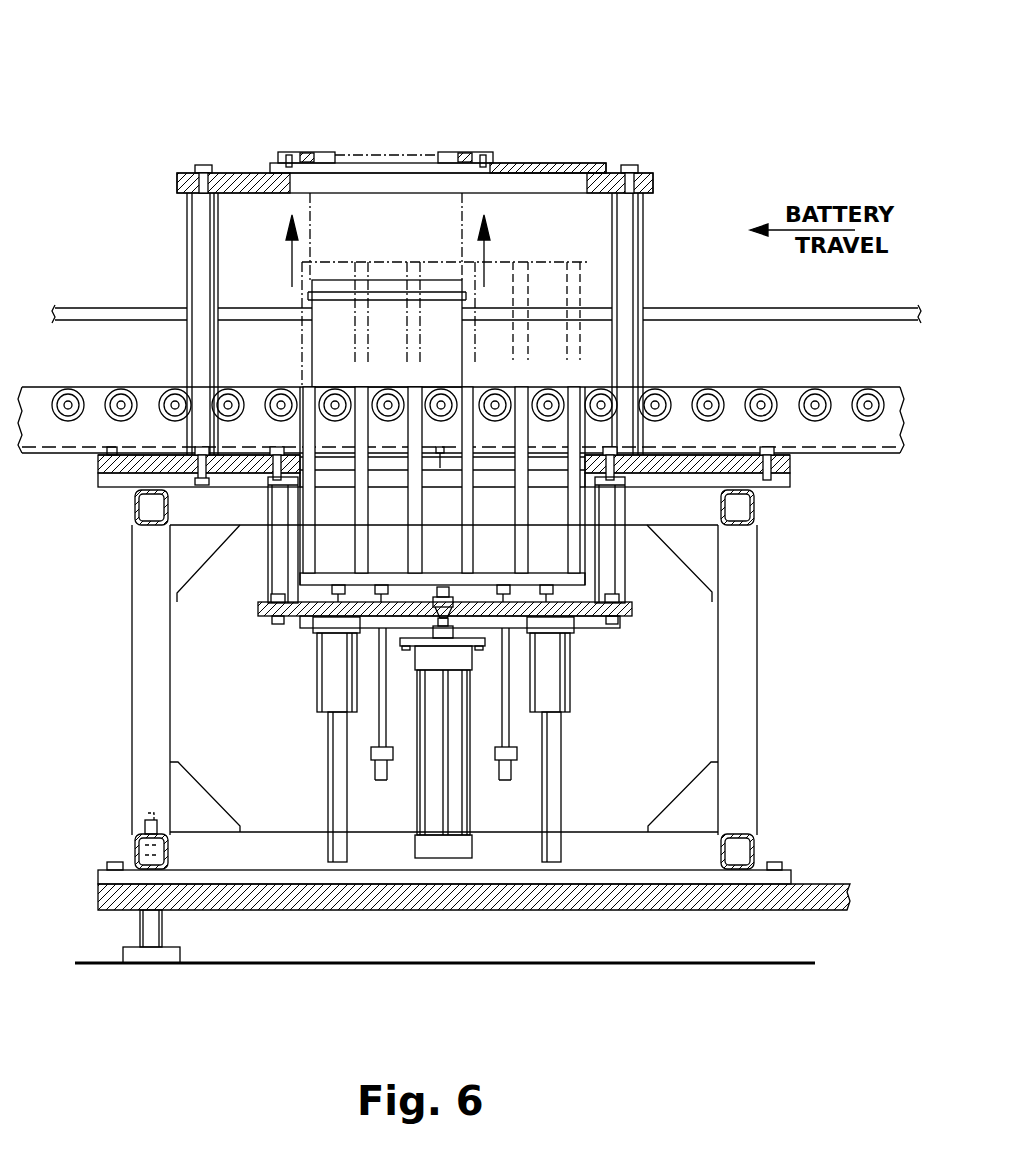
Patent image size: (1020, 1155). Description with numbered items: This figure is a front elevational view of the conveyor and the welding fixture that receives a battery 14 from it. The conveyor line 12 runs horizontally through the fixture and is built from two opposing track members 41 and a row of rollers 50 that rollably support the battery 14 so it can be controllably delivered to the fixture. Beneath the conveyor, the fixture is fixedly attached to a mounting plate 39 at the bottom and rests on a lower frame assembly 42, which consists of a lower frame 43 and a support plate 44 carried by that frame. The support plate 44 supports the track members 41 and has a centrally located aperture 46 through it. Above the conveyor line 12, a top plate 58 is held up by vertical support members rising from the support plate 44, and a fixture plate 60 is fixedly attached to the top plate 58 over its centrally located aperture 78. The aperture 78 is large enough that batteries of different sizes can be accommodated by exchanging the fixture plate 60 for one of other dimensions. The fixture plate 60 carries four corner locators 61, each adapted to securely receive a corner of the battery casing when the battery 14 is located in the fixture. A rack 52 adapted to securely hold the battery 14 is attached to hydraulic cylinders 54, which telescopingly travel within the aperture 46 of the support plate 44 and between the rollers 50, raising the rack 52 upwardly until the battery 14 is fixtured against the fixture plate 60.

The conveyor line 12 is at (866, 476).
The battery 14 is at (312, 332).
The mounting plate 39 is at (827, 884).
The track members 41 is at (898, 438).
The lower frame assembly 42 is at (762, 673).
The lower frame 43 is at (742, 715).
The support plate 44 is at (792, 466).
The aperture 46 is at (299, 457).
The rollers 50 is at (872, 386).
The rack 52 is at (308, 555).
The hydraulic cylinders 54 is at (272, 682).
The top plate 58 is at (656, 182).
The fixture plate 60 is at (538, 163).
The corner locators 61 is at (467, 157).
The aperture 78 is at (378, 128).